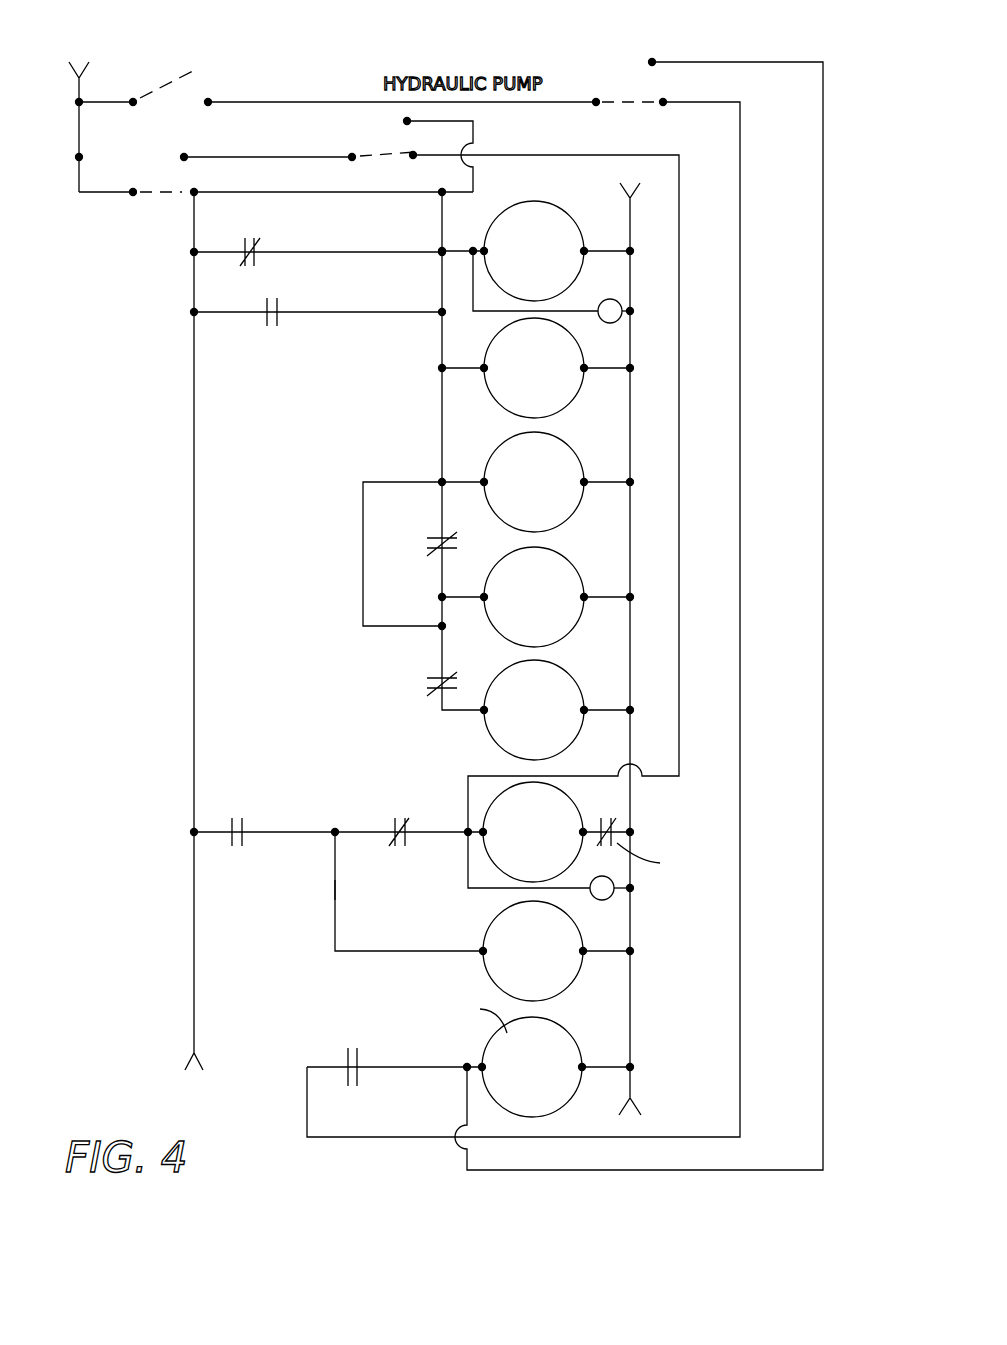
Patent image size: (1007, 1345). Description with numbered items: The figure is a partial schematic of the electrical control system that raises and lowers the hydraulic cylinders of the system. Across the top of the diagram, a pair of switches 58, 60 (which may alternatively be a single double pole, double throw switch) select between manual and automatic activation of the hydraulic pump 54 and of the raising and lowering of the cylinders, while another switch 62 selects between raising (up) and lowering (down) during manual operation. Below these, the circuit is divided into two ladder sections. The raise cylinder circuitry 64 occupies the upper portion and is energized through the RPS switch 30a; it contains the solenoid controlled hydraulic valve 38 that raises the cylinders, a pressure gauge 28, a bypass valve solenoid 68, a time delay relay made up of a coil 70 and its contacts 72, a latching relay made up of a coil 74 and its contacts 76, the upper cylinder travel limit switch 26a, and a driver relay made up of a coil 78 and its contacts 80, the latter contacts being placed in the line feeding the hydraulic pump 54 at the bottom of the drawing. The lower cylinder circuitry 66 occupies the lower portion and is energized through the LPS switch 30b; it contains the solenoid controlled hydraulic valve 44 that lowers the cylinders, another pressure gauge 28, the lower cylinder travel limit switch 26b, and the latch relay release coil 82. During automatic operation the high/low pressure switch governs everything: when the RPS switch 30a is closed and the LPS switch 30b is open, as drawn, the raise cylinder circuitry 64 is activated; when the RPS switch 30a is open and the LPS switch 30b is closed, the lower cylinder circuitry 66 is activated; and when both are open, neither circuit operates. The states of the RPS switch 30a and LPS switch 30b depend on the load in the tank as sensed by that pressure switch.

The switch 58 is at (640, 98).
The switch 60 is at (172, 190).
The switch 62 is at (372, 154).
The solenoid controlled hydraulic valve 38 is at (523, 208).
The pressure gauge 28 is at (618, 300).
The RPS switch 30a is at (257, 262).
The latching relay contacts 76 is at (278, 322).
The raise cylinder circuitry 64 is at (400, 419).
The bypass valve solenoid 68 is at (557, 403).
The time delay relay contacts 72 is at (437, 535).
The time delay relay coil 70 is at (560, 512).
The latching relay coil 74 is at (560, 628).
The upper cylinder travel limit switch 26a is at (437, 675).
The driver relay coil 78 is at (560, 738).
The solenoid controlled hydraulic valve 44 is at (572, 802).
The lower cylinder travel limit switch 26b is at (622, 822).
The LPS switch 30b is at (247, 838).
The lower cylinder circuitry 66 is at (310, 923).
The latch relay release coil 82 is at (484, 916).
The hydraulic pump 54 is at (459, 1057).
The driver relay contacts 80 is at (347, 1060).